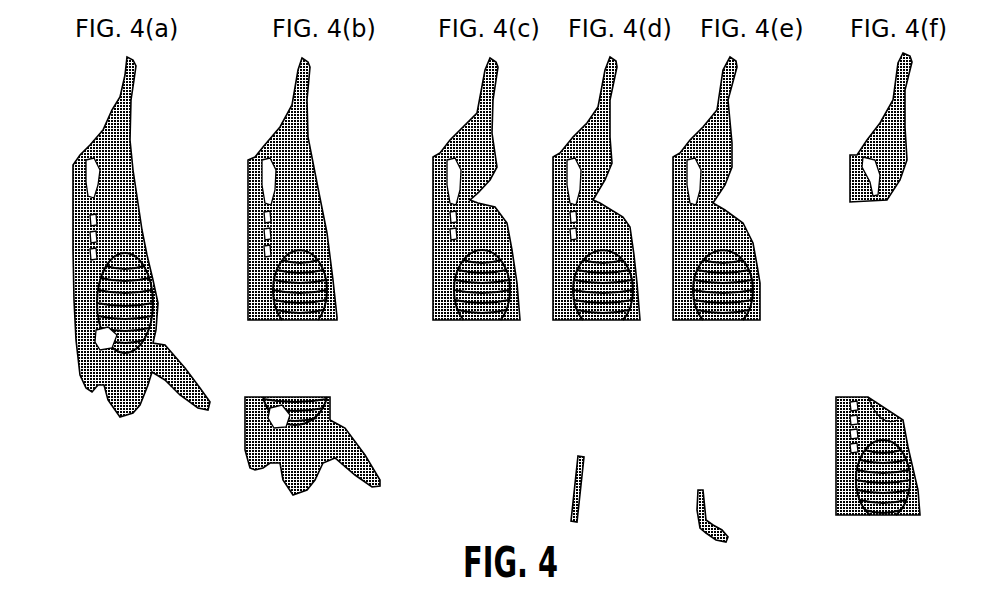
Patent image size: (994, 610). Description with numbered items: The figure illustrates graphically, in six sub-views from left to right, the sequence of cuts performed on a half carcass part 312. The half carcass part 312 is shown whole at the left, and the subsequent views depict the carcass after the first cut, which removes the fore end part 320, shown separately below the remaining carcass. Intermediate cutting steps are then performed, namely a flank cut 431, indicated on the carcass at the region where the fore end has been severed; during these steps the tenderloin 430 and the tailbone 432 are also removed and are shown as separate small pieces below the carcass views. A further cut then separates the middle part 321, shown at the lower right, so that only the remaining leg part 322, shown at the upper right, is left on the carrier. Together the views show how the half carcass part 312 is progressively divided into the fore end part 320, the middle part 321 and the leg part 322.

The half carcass part 312 is at (83, 103).
The fore end part 320 is at (252, 447).
The middle part 321 is at (837, 430).
The leg part 322 is at (850, 177).
The tenderloin 430 is at (574, 490).
The flank cut 431 is at (486, 192).
The tailbone 432 is at (713, 517).